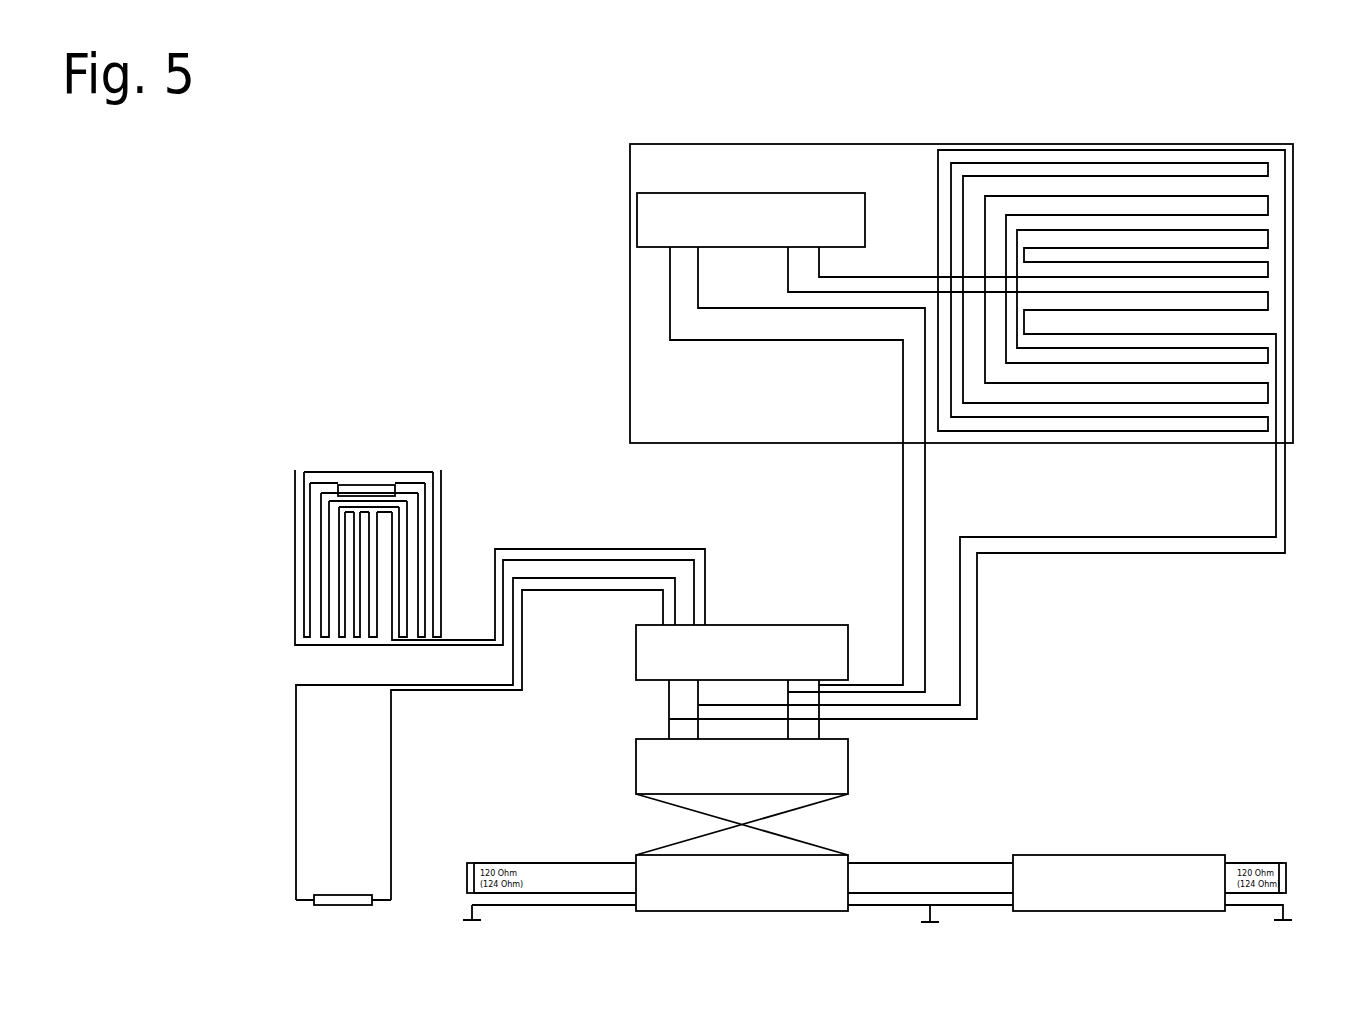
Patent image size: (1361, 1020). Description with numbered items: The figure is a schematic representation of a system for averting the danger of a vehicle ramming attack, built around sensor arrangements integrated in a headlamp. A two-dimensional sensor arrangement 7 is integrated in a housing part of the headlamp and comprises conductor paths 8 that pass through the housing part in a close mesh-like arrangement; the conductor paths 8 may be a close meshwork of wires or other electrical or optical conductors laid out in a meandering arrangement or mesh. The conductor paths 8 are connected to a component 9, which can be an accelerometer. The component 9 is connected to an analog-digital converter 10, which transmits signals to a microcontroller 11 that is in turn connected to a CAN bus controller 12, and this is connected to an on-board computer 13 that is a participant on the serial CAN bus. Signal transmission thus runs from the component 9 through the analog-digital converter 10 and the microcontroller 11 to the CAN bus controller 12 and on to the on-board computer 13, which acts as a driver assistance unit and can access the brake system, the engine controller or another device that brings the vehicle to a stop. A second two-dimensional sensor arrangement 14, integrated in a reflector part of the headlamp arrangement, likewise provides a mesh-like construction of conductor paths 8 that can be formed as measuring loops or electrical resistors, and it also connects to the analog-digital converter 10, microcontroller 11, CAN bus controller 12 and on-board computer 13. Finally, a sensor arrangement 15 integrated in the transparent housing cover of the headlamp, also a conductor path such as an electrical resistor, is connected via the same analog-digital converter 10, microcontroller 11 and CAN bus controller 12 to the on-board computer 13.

The two-dimensional sensor arrangement 7 is at (1176, 133).
The conductor paths 8 is at (1243, 197).
The component 9 is at (751, 220).
The analog-digital converter 10 is at (742, 652).
The microcontroller 11 is at (742, 766).
The CAN bus controller 12 is at (742, 883).
The on-board computer 13 is at (1119, 883).
The two-dimensional sensor arrangement 14 is at (374, 464).
The sensor arrangement 15 is at (274, 796).